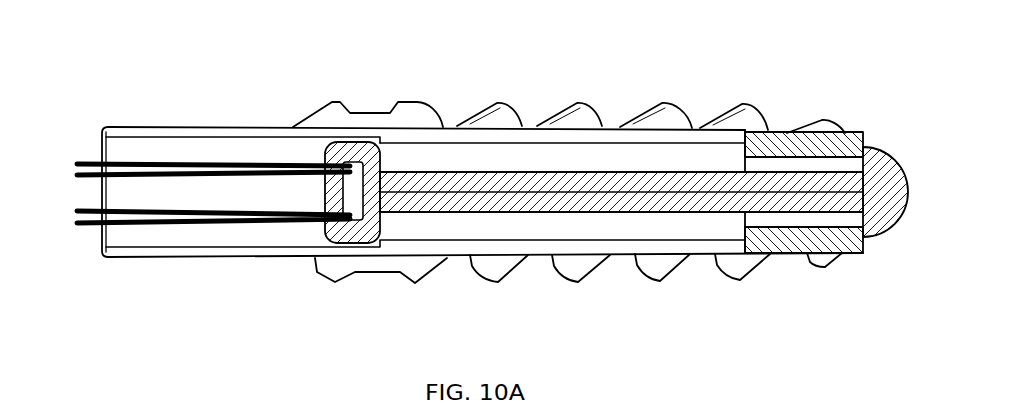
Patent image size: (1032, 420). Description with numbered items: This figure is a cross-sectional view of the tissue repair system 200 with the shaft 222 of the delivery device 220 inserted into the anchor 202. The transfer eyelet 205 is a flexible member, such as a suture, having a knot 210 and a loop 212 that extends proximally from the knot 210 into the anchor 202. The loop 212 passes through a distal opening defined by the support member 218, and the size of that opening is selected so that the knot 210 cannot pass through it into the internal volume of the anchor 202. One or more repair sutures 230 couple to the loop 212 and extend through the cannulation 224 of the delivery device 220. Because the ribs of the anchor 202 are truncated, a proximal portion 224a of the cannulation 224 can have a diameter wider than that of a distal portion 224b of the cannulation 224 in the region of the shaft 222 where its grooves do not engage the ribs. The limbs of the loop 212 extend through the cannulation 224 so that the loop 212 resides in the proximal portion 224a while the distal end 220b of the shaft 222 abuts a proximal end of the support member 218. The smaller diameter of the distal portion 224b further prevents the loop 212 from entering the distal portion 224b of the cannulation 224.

The tissue repair system 200 is at (110, 52).
The anchor 202 is at (417, 113).
The transfer eyelet 205 is at (603, 203).
The knot 210 is at (878, 192).
The loop 212 is at (328, 198).
The support member 218 is at (780, 147).
The delivery device 220 is at (448, 248).
The distal end of the shaft 220b is at (688, 136).
The shaft 222 is at (197, 253).
The cannulation 224 is at (255, 150).
The proximal portion of the cannulation 224a is at (170, 149).
The distal portion of the cannulation 224b is at (517, 160).
The repair sutures 230 is at (94, 207).